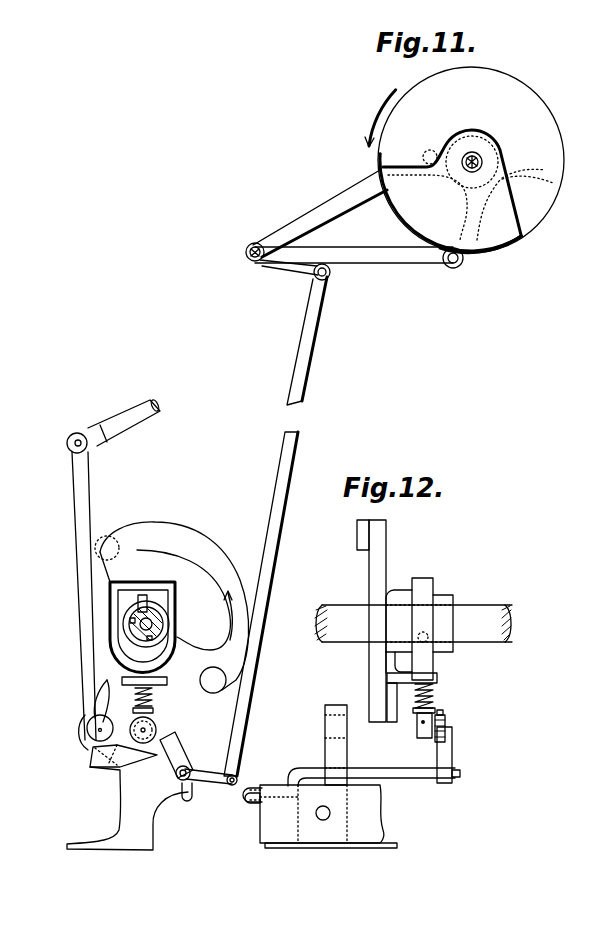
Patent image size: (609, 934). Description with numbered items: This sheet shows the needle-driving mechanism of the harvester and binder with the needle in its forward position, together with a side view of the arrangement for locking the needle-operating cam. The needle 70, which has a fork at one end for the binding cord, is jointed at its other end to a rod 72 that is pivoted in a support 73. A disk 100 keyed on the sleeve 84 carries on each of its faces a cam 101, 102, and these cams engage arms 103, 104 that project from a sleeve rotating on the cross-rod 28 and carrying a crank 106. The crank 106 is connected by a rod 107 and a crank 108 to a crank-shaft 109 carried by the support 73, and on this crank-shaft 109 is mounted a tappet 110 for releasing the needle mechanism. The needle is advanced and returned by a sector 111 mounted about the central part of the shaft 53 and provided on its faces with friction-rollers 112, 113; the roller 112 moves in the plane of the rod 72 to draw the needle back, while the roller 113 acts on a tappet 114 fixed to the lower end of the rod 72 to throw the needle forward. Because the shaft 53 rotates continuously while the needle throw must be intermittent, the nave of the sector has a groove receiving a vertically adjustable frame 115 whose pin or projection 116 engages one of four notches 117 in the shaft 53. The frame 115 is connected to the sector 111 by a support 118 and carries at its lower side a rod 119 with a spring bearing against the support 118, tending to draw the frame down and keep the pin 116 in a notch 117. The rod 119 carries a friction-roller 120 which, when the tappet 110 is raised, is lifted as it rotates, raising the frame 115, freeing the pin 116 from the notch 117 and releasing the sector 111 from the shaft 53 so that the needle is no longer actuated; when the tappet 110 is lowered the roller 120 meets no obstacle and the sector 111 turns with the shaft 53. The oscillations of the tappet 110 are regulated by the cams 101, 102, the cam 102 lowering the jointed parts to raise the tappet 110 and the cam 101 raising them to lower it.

In FIG. 11, the disk 100 is at (527, 86).
In FIG. 11, the sleeve 84 is at (480, 156).
In FIG. 11, the cam 101 is at (553, 183).
In FIG. 11, the cam 102 is at (503, 247).
In FIG. 11, the arm 103 is at (330, 207).
In FIG. 11, the arm 104 is at (365, 257).
In FIG. 11, the cross-rod 28 is at (246, 252).
In FIG. 11, the crank 106 is at (292, 276).
In FIG. 11, the rod 107 is at (298, 368).
In FIG. 11, the needle 70 is at (132, 420).
In FIG. 11, the rod 72 is at (82, 517).
In FIG. 11, the friction-roller 112 is at (110, 540).
In FIG. 12, the friction-roller 112 is at (358, 537).
In FIG. 11, the sector 111 is at (198, 552).
In FIG. 12, the sector 111 is at (378, 562).
In FIG. 11, the frame 115 is at (172, 590).
In FIG. 12, the frame 115 is at (423, 583).
In FIG. 11, the shaft 53 is at (127, 638).
In FIG. 12, the shaft 53 is at (475, 610).
In FIG. 11, the pin or projection 116 is at (140, 596).
In FIG. 11, the notches 117 is at (160, 620).
In FIG. 12, the notches 117 is at (425, 610).
In FIG. 11, the friction-roller 113 is at (222, 678).
In FIG. 12, the friction-roller 113 is at (393, 703).
In FIG. 11, the support 118 is at (162, 677).
In FIG. 12, the support 118 is at (438, 672).
In FIG. 11, the friction-roller 120 is at (150, 728).
In FIG. 12, the friction-roller 120 is at (444, 712).
In FIG. 11, the tappet 110 is at (175, 742).
In FIG. 12, the tappet 110 is at (446, 755).
In FIG. 11, the crank 108 is at (214, 784).
In FIG. 11, the crank-shaft 109 is at (252, 802).
In FIG. 12, the crank-shaft 109 is at (454, 770).
In FIG. 11, the tappet 114 is at (128, 761).
In FIG. 11, the support 73 is at (120, 770).
In FIG. 12, the support 73 is at (340, 748).
In FIG. 12, the rod 119 is at (422, 723).